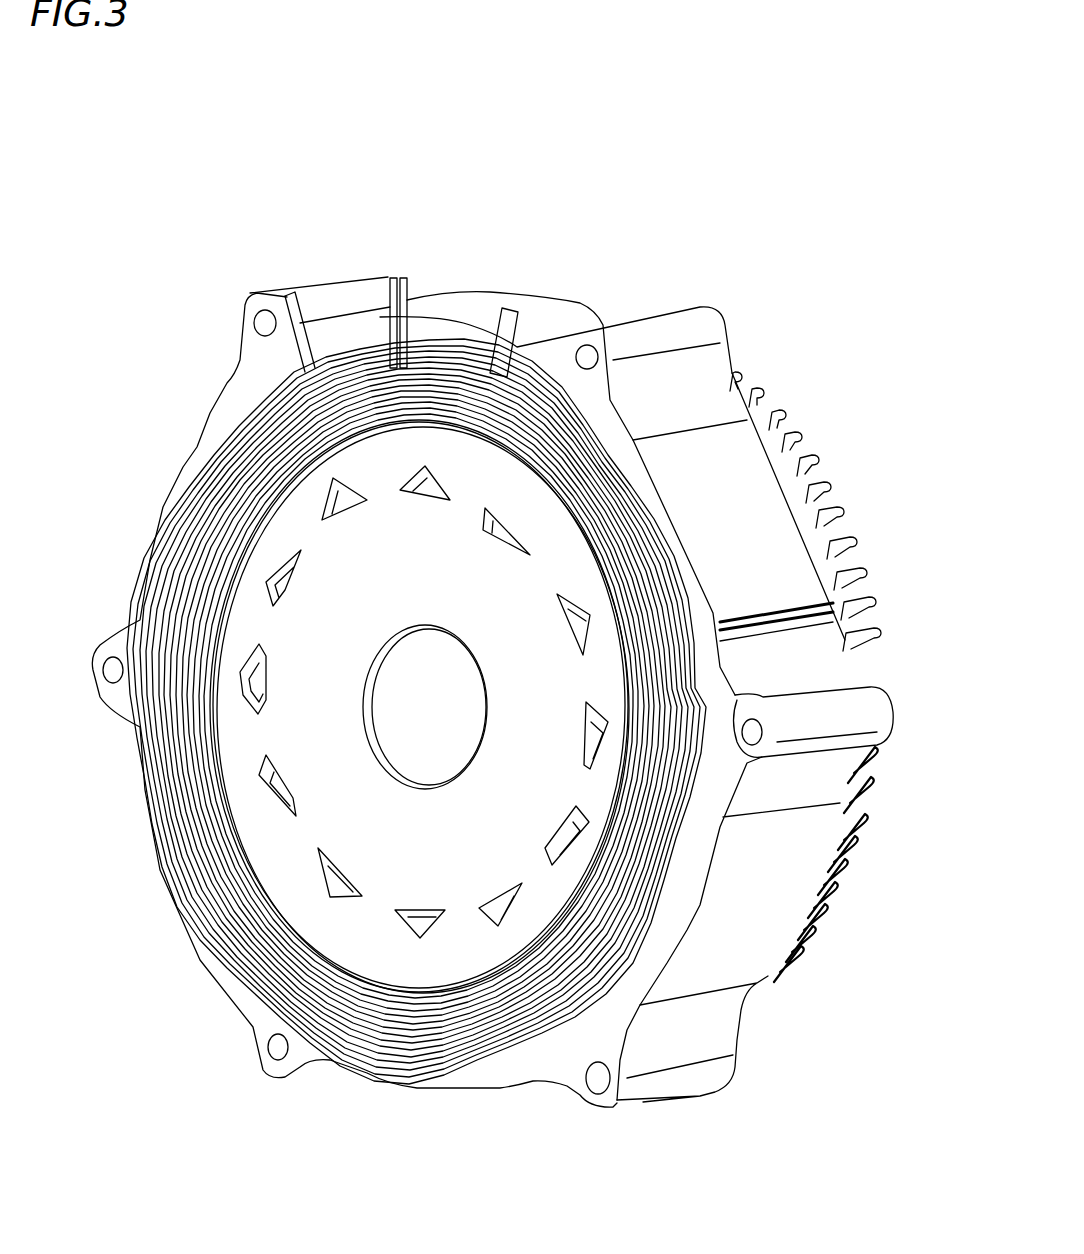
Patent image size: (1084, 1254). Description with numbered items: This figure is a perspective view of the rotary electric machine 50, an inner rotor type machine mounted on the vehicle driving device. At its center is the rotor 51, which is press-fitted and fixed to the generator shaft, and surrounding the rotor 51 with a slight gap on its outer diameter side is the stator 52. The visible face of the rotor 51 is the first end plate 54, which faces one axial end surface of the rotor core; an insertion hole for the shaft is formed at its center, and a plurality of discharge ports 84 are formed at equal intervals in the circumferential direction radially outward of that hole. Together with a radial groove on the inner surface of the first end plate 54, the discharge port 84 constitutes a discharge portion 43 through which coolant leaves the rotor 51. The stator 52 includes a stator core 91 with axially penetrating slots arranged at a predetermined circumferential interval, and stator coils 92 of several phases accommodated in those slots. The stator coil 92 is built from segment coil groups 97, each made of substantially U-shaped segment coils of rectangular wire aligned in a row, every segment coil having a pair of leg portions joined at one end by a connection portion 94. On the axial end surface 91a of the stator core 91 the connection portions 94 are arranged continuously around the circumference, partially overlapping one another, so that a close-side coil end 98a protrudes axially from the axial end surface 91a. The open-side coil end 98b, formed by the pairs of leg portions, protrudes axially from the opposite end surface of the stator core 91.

The rotary electric machine 50 is at (644, 126).
The stator 52 is at (602, 292).
The rotor 51 is at (308, 855).
The first end plate 54 is at (463, 953).
The connection portion 94 is at (463, 1070).
The segment coil group 97 is at (147, 620).
The stator coil 92 is at (185, 475).
The discharge port 84 is at (588, 716).
The discharge portion 43 is at (465, 707).
The stator core 91 is at (753, 472).
The axial end surface 91a is at (720, 768).
The close-side coil end 98a is at (693, 560).
The open-side coil end 98b is at (862, 514).